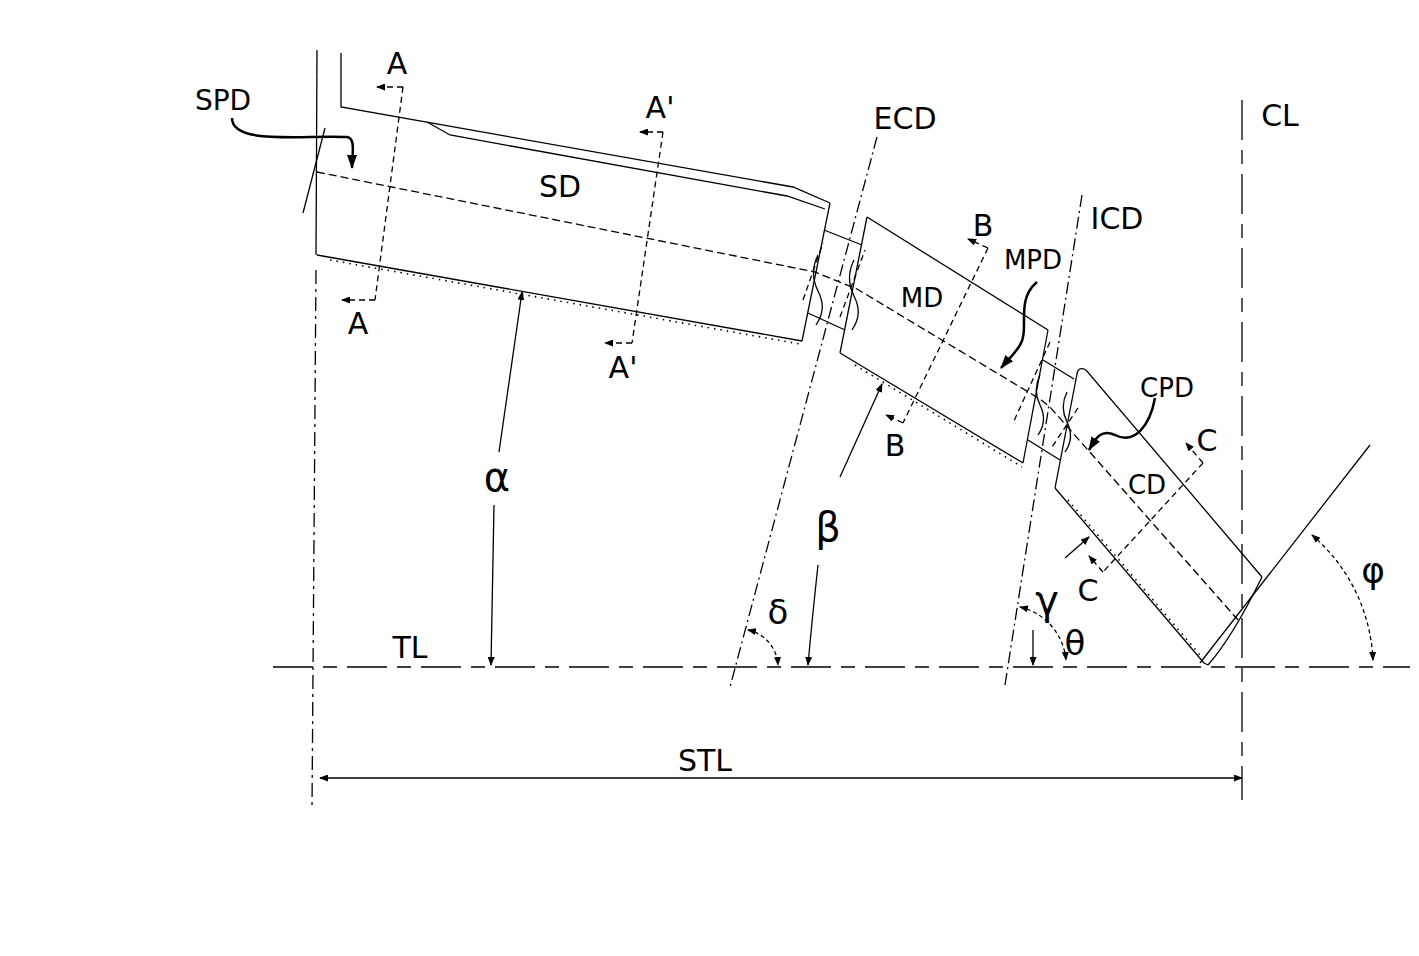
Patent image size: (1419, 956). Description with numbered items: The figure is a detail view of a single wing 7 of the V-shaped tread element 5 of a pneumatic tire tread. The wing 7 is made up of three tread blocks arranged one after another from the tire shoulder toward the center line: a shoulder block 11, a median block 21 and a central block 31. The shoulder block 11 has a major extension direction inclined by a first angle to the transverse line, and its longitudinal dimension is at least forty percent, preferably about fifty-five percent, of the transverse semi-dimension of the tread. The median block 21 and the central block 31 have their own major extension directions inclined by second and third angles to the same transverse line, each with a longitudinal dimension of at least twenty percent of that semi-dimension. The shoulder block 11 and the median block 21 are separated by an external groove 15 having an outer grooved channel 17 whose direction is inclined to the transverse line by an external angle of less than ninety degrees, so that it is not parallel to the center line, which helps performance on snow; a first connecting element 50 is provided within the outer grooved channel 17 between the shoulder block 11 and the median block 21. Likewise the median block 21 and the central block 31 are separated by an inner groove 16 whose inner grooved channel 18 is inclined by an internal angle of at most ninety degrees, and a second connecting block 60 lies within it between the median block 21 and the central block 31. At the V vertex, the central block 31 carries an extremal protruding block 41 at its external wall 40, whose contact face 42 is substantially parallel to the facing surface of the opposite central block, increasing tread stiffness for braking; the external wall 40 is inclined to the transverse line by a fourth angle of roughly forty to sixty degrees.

The tread element 5 is at (212, 173).
The wing 7 is at (599, 80).
The shoulder block 11 is at (471, 125).
The external groove 15 is at (805, 357).
The inner groove 16 is at (1026, 475).
The outer grooved channel 17 is at (832, 347).
The inner grooved channel 18 is at (1047, 480).
The median block 21 is at (897, 230).
The central block 31 is at (1110, 381).
The external wall 40 is at (1255, 601).
The extremal protruding block 41 is at (1195, 662).
The contact face 42 is at (1227, 657).
The first connecting element 50 is at (843, 223).
The second connecting block 60 is at (1066, 361).